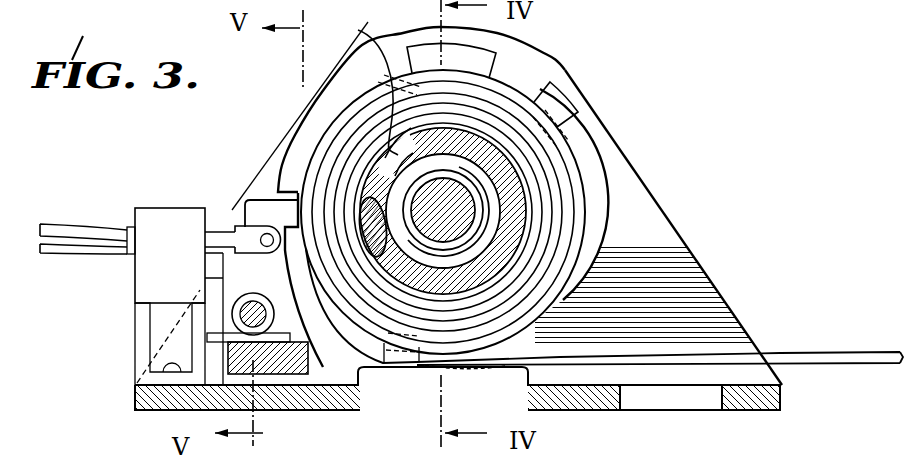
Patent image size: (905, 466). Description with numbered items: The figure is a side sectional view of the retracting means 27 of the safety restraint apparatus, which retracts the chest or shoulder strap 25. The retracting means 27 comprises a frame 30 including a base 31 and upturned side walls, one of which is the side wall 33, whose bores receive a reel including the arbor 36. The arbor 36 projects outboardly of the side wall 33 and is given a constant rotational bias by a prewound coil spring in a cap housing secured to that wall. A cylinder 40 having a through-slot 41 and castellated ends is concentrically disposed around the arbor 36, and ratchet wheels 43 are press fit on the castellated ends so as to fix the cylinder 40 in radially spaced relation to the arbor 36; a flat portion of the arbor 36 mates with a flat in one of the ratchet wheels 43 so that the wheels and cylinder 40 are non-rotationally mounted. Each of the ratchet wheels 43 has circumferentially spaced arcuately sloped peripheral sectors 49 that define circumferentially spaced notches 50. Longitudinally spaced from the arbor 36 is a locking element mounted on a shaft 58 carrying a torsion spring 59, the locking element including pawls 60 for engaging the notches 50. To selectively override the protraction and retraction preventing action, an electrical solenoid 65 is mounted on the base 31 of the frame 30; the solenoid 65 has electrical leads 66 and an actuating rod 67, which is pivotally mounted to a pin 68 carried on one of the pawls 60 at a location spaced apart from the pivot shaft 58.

The chest or shoulder strap 25 is at (560, 244).
The retracting means 27 is at (755, 100).
The frame 30 is at (737, 290).
The base 31 is at (300, 412).
The side wall 33 is at (290, 142).
The arbor 36 is at (432, 190).
The cylinder 40 is at (563, 218).
The through-slot 41 is at (366, 85).
The ratchet wheels 43 is at (560, 76).
The arcuately sloped peripheral sectors 49 is at (527, 58).
The notches 50 is at (585, 114).
The shaft 58 is at (272, 313).
The torsion spring 59 is at (233, 305).
The pawls 60 is at (263, 200).
The electrical solenoid 65 is at (175, 217).
The electrical leads 66 is at (60, 248).
The actuating rod 67 is at (250, 226).
The pin 68 is at (266, 248).